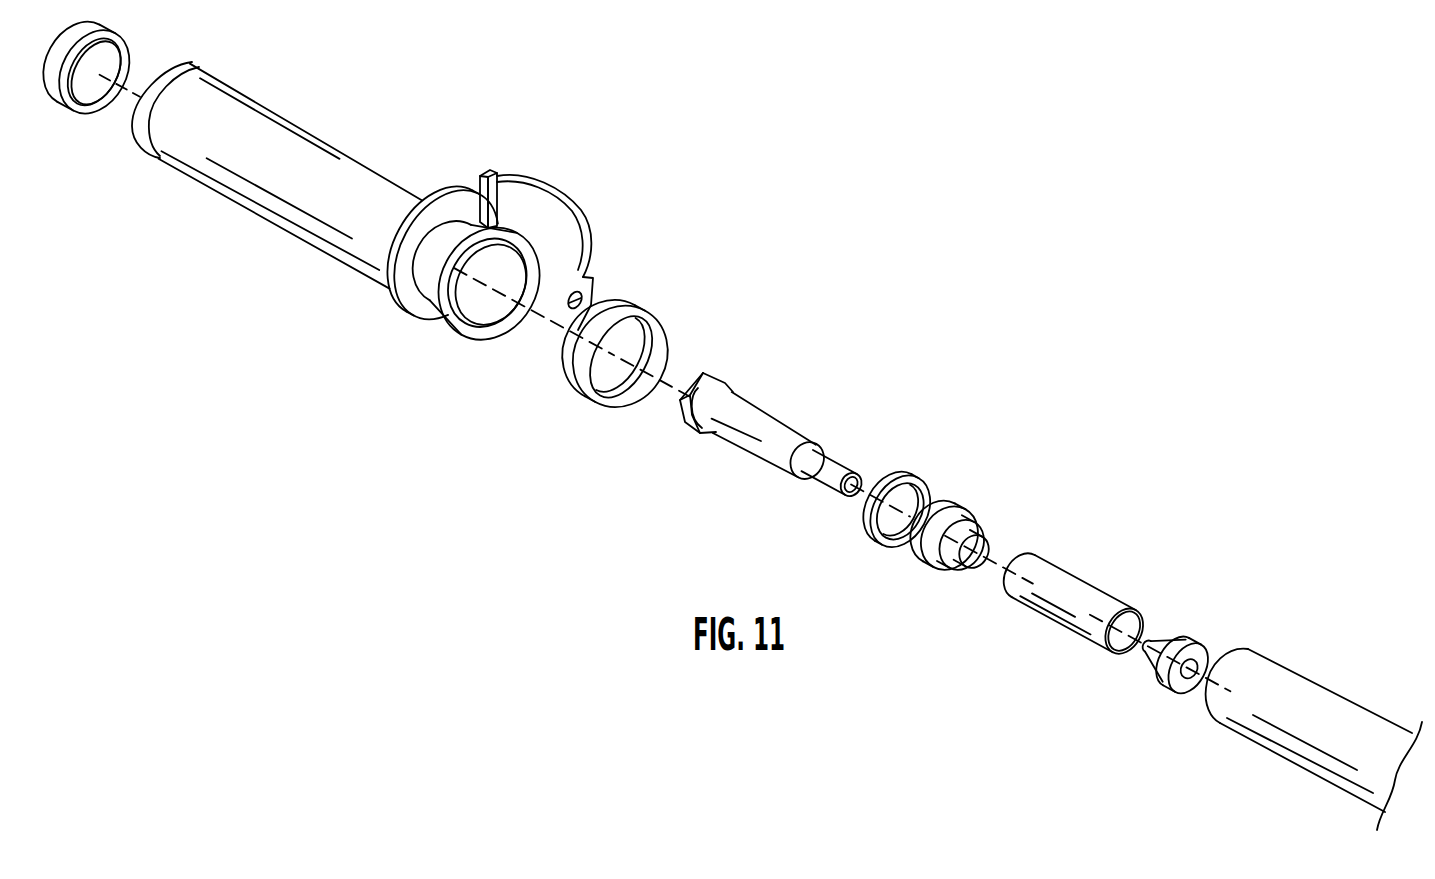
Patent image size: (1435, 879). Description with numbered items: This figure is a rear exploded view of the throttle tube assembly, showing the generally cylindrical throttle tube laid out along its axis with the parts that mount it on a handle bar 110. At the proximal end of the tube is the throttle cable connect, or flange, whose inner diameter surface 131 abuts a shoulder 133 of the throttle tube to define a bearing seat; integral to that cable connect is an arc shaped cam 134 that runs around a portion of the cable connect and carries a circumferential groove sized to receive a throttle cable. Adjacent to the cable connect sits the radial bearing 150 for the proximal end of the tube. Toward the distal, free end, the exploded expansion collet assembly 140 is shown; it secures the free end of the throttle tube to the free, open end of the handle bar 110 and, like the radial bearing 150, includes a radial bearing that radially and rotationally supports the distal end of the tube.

The handle bar 110 is at (1318, 700).
The inner diameter surface 131 is at (537, 267).
The shoulder 133 is at (524, 257).
The arc shaped cam 134 is at (528, 202).
The expansion collet assembly 140 is at (1220, 620).
The radial bearing 150 is at (657, 313).